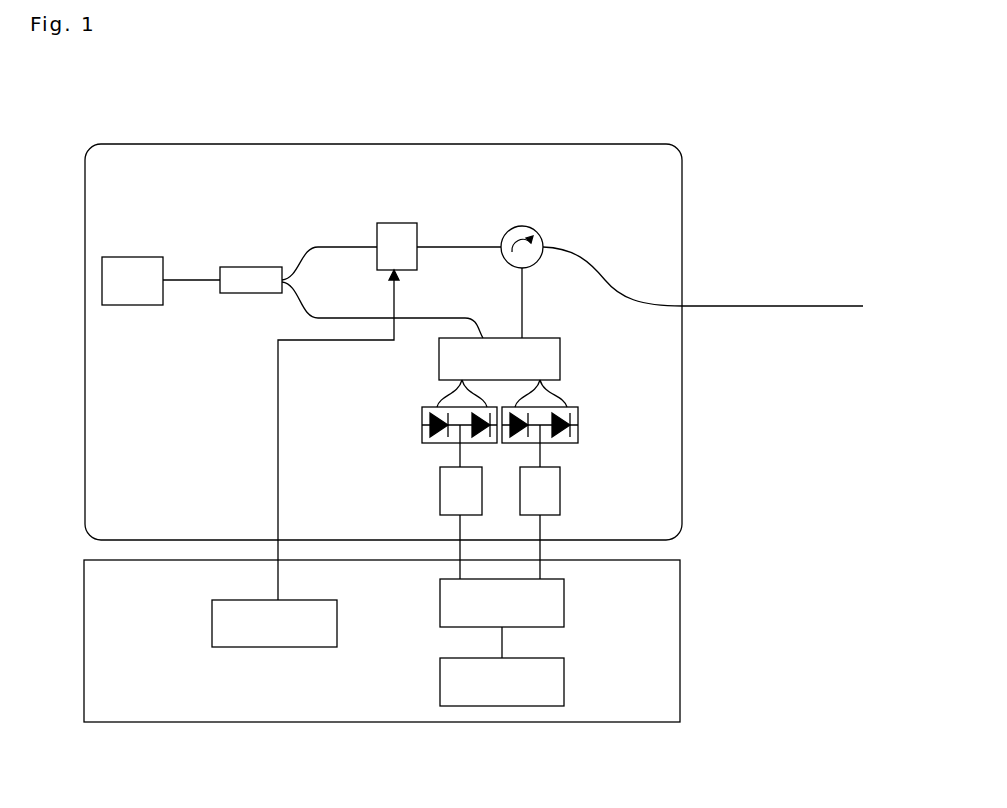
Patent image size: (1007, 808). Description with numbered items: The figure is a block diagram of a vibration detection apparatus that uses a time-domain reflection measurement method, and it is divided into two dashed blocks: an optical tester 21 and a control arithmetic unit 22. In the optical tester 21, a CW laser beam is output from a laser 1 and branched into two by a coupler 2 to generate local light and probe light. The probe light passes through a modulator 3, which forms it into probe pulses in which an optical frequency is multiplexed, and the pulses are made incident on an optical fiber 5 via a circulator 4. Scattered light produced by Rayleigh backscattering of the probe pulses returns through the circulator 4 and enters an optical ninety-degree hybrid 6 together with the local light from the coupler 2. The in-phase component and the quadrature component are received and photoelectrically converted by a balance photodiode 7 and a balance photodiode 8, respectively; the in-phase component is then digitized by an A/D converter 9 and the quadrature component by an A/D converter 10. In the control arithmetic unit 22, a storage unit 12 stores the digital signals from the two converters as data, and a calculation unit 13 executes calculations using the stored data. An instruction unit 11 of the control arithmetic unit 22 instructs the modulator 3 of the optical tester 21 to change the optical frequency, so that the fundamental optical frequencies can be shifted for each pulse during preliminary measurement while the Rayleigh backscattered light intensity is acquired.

The laser 1 is at (132, 306).
The coupler 2 is at (253, 294).
The modulator 3 is at (399, 222).
The circulator 4 is at (535, 230).
The optical fiber 5 is at (745, 304).
The optical 90-degree hybrid 6 is at (439, 368).
The balance photodiode 7 is at (422, 440).
The balance photodiode 8 is at (578, 428).
The A/D converter 9 is at (440, 508).
The A/D converter 10 is at (560, 500).
The instruction unit 11 is at (212, 624).
The storage unit 12 is at (440, 605).
The calculation unit 13 is at (440, 683).
The optical tester 21 is at (682, 430).
The control arithmetic unit 22 is at (680, 617).